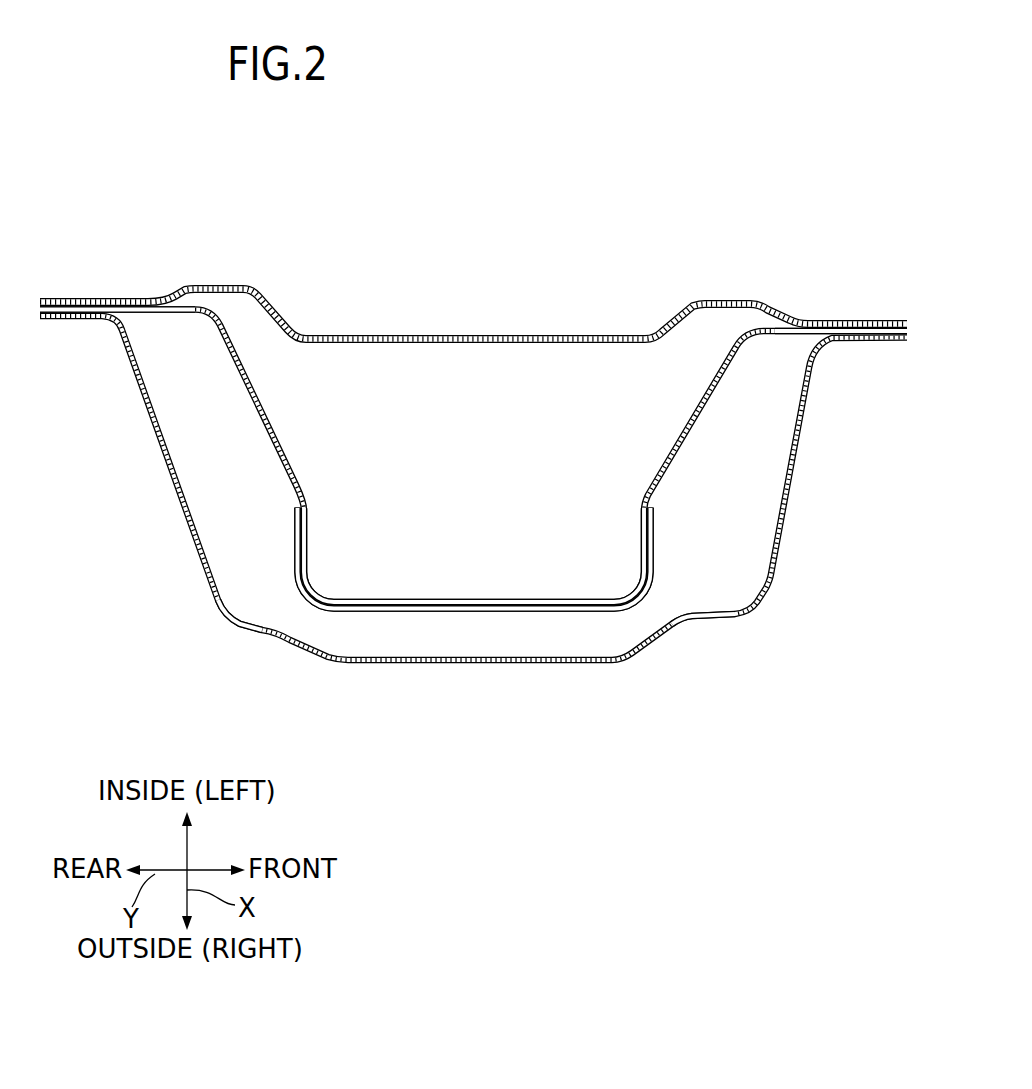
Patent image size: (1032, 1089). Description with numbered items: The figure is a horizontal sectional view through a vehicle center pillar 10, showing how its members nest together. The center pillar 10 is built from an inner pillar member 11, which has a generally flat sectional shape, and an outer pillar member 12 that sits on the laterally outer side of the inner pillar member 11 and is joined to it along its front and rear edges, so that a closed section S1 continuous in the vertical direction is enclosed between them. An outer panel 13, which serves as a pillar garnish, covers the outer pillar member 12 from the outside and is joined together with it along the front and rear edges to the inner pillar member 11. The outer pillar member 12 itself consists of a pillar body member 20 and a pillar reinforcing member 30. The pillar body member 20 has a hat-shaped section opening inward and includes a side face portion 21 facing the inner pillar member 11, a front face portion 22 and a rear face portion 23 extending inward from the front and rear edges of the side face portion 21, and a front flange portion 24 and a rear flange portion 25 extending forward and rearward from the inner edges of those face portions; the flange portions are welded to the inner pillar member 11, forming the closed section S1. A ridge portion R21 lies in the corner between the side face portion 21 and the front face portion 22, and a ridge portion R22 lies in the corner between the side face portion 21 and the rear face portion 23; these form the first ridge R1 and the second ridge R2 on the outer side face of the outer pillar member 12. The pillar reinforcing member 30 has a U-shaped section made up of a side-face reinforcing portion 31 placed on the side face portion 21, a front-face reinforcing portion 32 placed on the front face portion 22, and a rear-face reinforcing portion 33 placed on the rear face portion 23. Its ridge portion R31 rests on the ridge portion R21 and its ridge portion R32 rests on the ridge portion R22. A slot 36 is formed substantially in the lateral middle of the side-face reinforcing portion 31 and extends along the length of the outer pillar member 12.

The center pillar 10 is at (474, 431).
The inner pillar member 11 is at (496, 336).
The outer pillar member 12 is at (474, 532).
The outer panel 13 is at (551, 667).
The pillar body member 20 is at (686, 468).
The side face portion 21 is at (450, 598).
The front face portion 22 is at (641, 520).
The rear face portion 23 is at (311, 524).
The front flange portion 24 is at (812, 335).
The rear flange portion 25 is at (142, 314).
The pillar reinforcing member 30 is at (670, 536).
The side-face reinforcing portion 31 is at (436, 615).
The front-face reinforcing portion 32 is at (657, 522).
The rear-face reinforcing portion 33 is at (293, 537).
The slot 36 is at (483, 614).
The first ridge R1 is at (655, 600).
The second ridge R2 is at (294, 602).
The ridge portion R21 is at (632, 590).
The ridge portion R22 is at (320, 593).
The ridge portion R31 is at (640, 604).
The ridge portion R32 is at (308, 606).
The closed section S1 is at (502, 473).